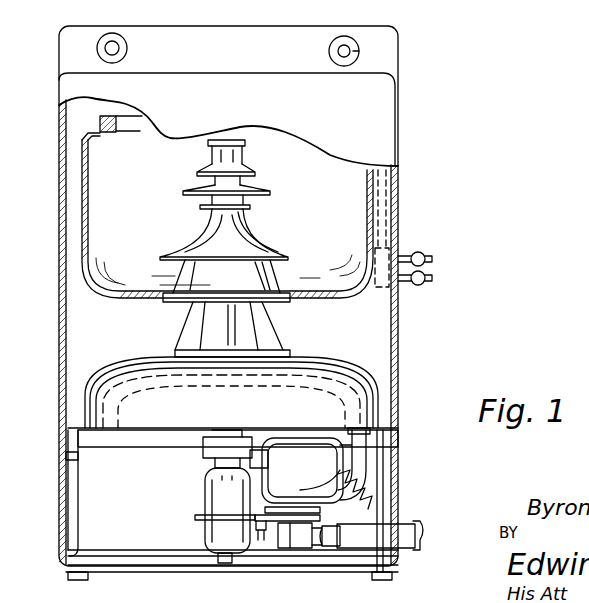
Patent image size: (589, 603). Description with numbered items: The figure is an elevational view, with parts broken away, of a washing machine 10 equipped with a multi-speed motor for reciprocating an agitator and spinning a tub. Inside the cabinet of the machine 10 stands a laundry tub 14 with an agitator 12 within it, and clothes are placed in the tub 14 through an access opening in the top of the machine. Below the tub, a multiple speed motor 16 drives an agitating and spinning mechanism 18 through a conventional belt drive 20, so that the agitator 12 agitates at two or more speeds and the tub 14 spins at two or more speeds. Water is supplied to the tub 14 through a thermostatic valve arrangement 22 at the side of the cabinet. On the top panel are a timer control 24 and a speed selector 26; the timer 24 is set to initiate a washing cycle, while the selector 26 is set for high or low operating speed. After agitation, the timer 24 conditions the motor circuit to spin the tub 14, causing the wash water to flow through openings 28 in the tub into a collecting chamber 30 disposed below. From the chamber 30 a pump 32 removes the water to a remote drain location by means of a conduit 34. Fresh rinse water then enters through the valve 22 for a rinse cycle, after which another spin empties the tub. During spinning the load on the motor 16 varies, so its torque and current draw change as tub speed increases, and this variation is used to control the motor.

The washing machine 10 is at (399, 103).
The agitator 12 is at (242, 237).
The tub 14 is at (318, 298).
The multiple speed motor 16 is at (300, 475).
The agitating and spinning mechanism 18 is at (210, 490).
The belt drive 20 is at (260, 540).
The thermostatic valve arrangement 22 is at (388, 262).
The timer control 24 is at (112, 33).
The speed selector 26 is at (352, 38).
The openings 28 is at (98, 130).
The collecting chamber 30 is at (105, 352).
The pump 32 is at (306, 545).
The conduit 34 is at (408, 536).